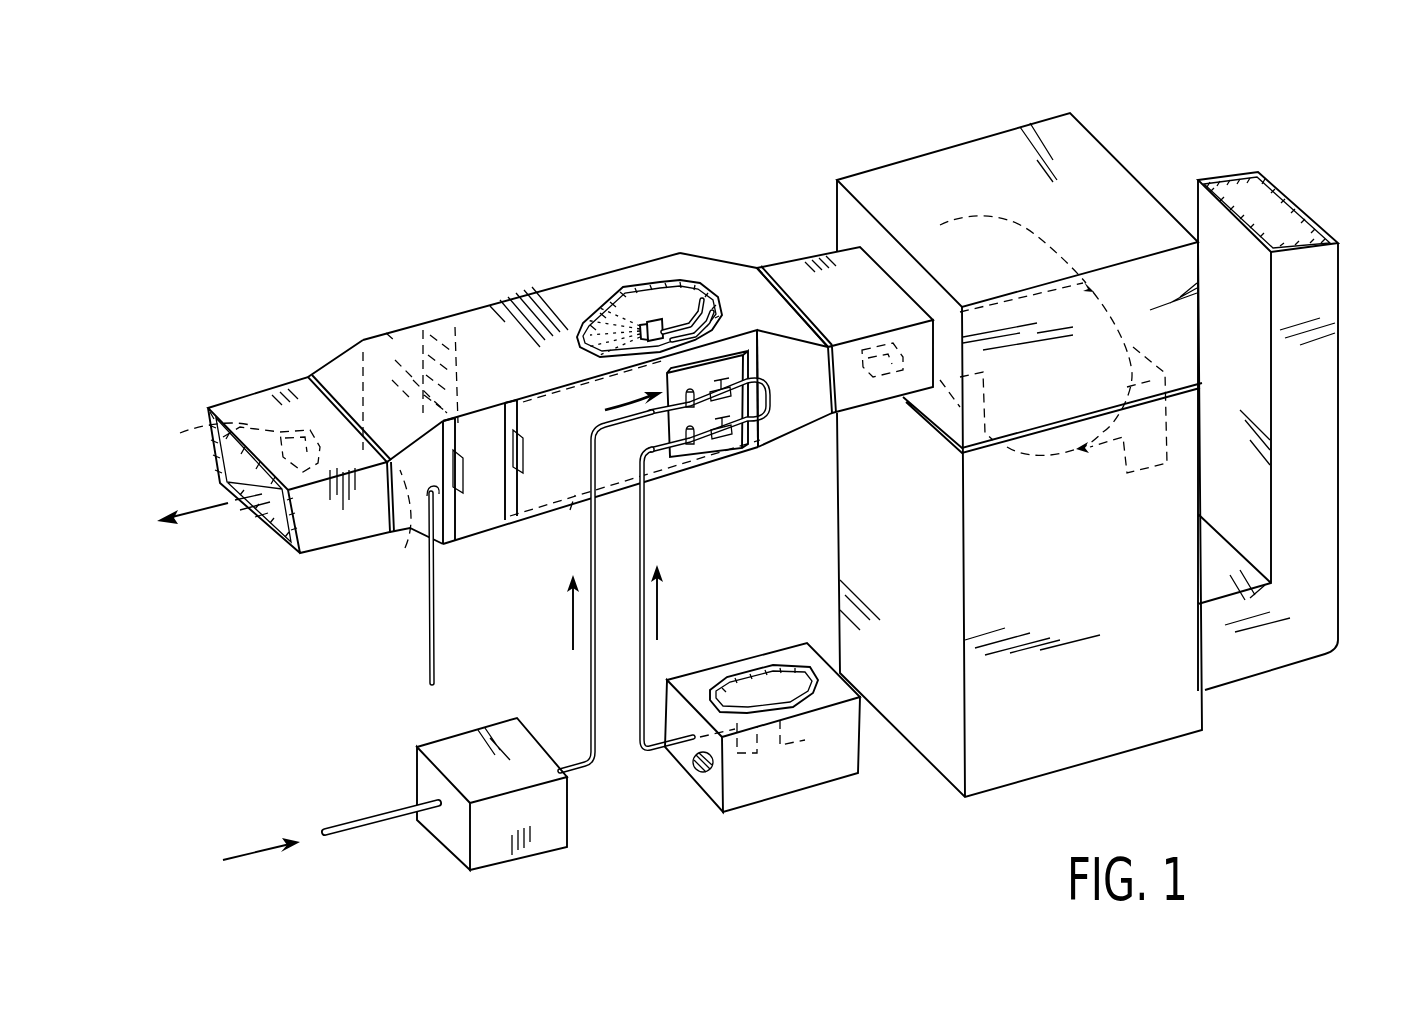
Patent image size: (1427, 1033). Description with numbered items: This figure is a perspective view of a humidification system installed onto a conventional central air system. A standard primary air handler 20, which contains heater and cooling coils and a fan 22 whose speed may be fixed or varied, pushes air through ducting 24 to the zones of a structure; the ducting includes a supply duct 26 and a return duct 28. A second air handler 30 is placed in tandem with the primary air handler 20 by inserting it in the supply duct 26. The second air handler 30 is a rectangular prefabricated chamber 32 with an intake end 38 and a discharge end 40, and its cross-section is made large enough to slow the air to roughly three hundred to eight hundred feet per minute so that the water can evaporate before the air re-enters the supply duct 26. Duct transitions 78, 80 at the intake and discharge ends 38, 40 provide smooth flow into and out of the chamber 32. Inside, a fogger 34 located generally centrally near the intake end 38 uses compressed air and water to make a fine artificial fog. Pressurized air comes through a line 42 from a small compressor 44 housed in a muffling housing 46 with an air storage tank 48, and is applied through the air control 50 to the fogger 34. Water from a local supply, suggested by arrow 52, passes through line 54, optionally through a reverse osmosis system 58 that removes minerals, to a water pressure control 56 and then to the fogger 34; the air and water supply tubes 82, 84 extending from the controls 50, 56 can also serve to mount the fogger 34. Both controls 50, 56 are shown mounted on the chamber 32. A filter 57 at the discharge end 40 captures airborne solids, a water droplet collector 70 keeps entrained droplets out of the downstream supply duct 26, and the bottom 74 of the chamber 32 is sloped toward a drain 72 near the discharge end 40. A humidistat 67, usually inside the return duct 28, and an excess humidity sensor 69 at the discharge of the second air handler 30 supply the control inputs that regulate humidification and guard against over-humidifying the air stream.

The primary air handler 20 is at (1047, 123).
The fan 22 is at (1050, 447).
The ducting 24 is at (1293, 142).
The supply duct 26 is at (258, 405).
The return duct 28 is at (1307, 214).
The second air handler 30 is at (618, 238).
The prefabricated chamber 32 is at (556, 297).
The fogger 34 is at (667, 318).
The intake end 38 is at (700, 330).
The discharge end 40 is at (405, 548).
The line 42 is at (663, 532).
The compressor 44 is at (790, 700).
The muffling housing 46 is at (767, 687).
The air storage tank 48 is at (742, 790).
The air control 50 is at (704, 462).
The water supply 52 is at (250, 853).
The line 54 is at (585, 690).
The water pressure control 56 is at (611, 407).
The filter 57 is at (385, 333).
The reverse osmosis system 58 is at (543, 837).
The humidistat 67 is at (888, 373).
The excess humidity sensor 69 is at (223, 437).
The water droplet collector 70 is at (457, 320).
The drain 72 is at (440, 620).
The bottom 74 is at (570, 510).
The duct transition 78 is at (793, 418).
The duct transition 80 is at (340, 374).
The air supply tube 82 is at (757, 400).
The water supply tube 84 is at (708, 336).